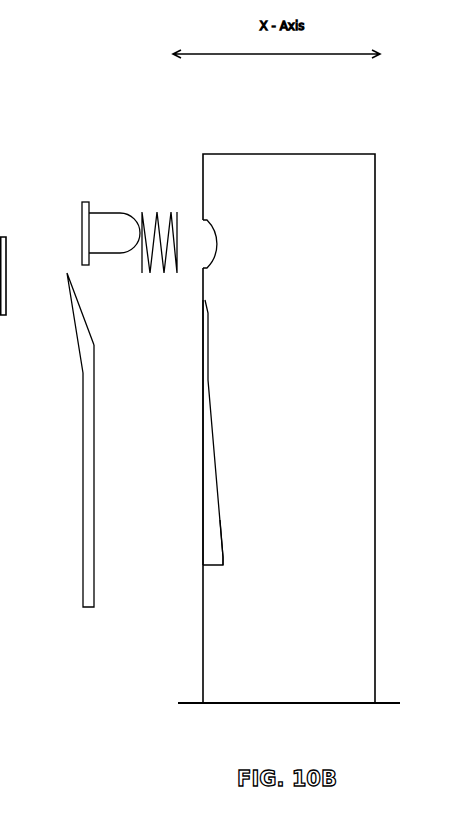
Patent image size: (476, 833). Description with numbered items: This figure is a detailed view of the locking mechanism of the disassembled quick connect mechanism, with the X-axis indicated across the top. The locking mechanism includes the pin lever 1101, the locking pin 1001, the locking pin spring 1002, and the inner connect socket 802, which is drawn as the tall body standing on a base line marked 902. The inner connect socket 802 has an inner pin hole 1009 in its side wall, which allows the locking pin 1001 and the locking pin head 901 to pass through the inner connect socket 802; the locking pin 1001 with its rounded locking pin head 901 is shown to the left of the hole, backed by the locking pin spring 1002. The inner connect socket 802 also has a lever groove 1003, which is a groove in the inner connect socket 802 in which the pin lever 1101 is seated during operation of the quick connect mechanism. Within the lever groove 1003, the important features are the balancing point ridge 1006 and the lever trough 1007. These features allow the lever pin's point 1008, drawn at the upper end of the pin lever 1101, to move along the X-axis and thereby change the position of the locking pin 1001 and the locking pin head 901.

The inner connect socket 802 is at (203, 635).
The locking pin head 901 is at (137, 213).
The base surface 902 is at (392, 692).
The locking pin 1001 is at (75, 231).
The locking pin spring 1002 is at (142, 272).
The lever groove 1003 is at (196, 485).
The balancing point ridge 1006 is at (217, 382).
The lever trough 1007 is at (227, 537).
The lever pin's point 1008 is at (61, 303).
The inner pin hole 1009 is at (222, 233).
The pin lever 1101 is at (83, 423).